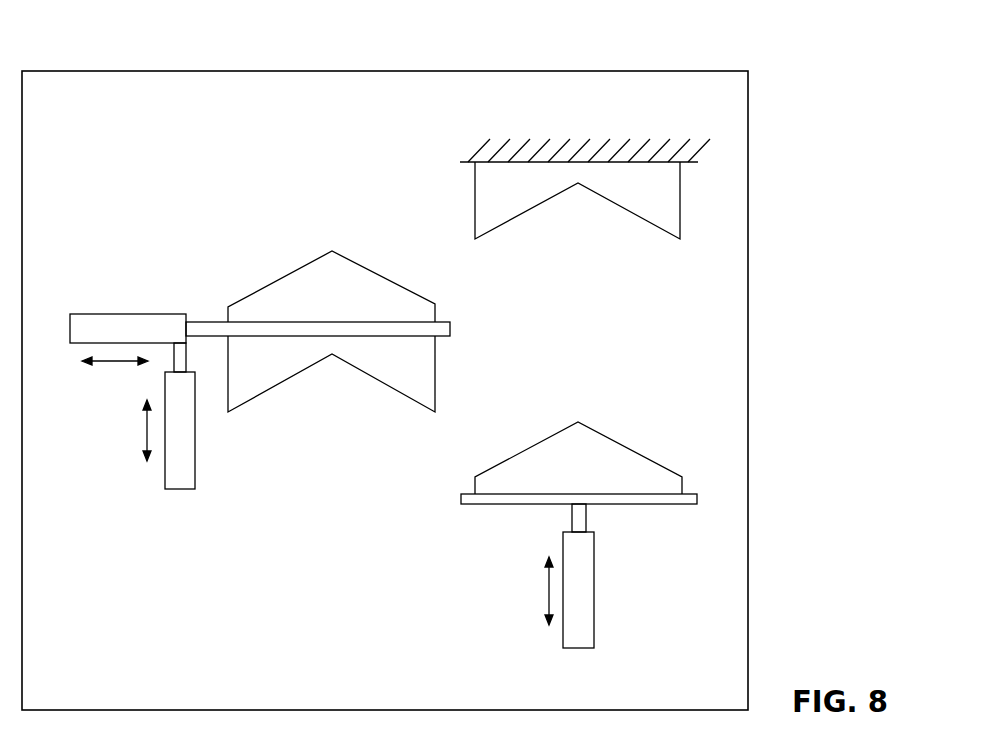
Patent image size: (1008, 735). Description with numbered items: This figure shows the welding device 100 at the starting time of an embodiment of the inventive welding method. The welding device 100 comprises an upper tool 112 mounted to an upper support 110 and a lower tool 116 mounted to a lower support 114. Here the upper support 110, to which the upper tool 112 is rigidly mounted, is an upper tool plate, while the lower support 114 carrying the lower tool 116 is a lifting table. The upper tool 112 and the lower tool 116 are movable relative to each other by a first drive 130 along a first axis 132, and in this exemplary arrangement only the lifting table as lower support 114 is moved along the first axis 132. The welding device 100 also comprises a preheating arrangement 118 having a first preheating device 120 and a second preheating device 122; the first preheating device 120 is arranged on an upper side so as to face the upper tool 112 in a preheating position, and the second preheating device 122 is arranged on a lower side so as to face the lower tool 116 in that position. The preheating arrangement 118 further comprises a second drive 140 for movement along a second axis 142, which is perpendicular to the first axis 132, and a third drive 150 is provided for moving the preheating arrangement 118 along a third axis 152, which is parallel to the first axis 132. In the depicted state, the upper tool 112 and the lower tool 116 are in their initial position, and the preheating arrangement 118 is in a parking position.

The welding device 100 is at (818, 142).
The upper support 110 is at (690, 166).
The upper tool 112 is at (663, 215).
The lower support 114 is at (663, 498).
The lower tool 116 is at (642, 476).
The preheating arrangement 118 is at (247, 268).
The first preheating device 120 is at (318, 268).
The second preheating device 122 is at (397, 380).
The first drive 130 is at (594, 597).
The first axis 132 is at (549, 585).
The second drive 140 is at (131, 313).
The second axis 142 is at (113, 362).
The third drive 150 is at (196, 440).
The third axis 152 is at (147, 430).